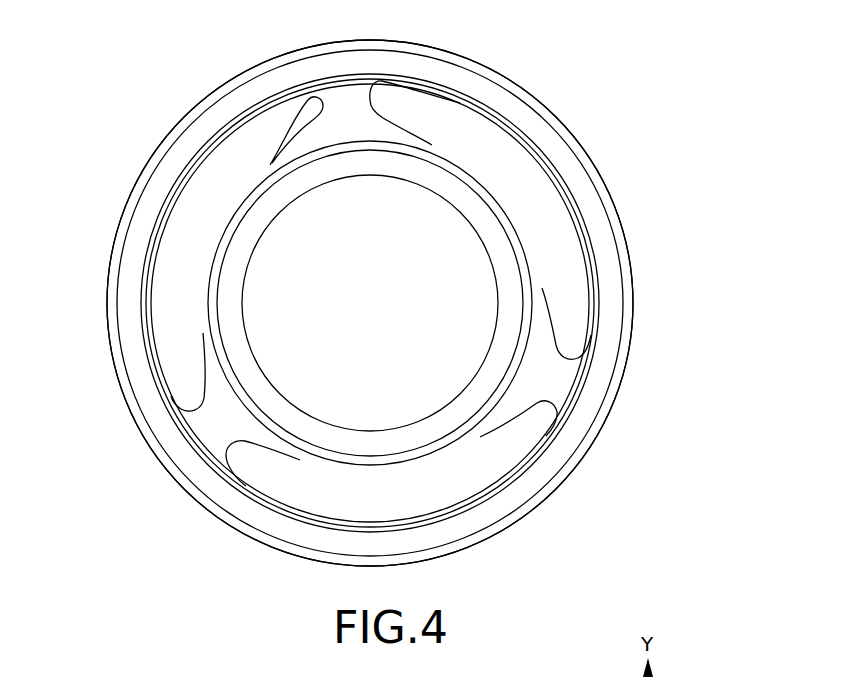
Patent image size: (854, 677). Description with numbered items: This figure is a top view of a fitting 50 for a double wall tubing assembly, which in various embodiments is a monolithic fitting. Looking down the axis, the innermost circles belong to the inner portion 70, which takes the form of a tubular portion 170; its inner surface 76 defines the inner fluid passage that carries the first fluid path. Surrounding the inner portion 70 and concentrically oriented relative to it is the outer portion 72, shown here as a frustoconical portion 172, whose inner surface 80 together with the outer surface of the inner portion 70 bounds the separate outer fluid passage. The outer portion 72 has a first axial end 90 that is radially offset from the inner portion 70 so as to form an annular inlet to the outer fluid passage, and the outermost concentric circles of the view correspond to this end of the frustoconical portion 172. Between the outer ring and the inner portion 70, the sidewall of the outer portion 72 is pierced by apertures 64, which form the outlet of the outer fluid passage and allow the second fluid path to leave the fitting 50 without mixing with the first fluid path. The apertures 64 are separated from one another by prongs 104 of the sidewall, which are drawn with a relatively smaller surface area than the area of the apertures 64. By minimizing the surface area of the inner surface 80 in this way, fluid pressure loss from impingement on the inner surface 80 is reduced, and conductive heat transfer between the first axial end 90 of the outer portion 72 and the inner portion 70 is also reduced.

The fitting 50 is at (84, 98).
The apertures 64 is at (567, 190).
The inner portion 70 is at (370, 303).
The tubular portion 170 is at (448, 200).
The outer portion 72 is at (426, 303).
The frustoconical portion 172 is at (633, 288).
The inner surface 76 is at (245, 331).
The inner surface 80 is at (210, 146).
The first axial end 90 is at (660, 242).
The prongs 104 is at (355, 86).